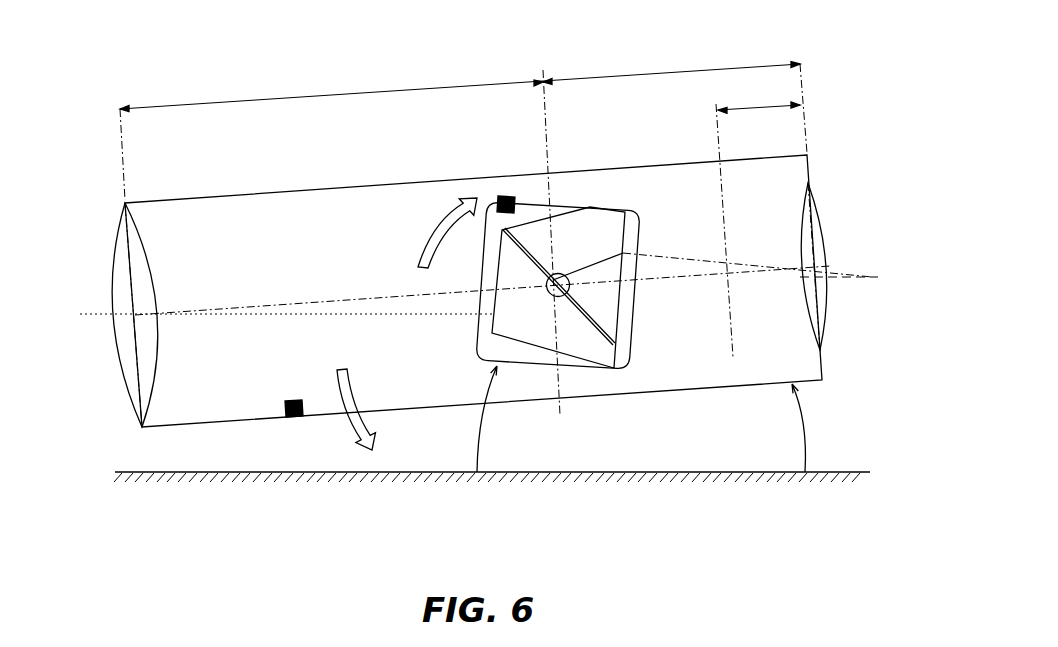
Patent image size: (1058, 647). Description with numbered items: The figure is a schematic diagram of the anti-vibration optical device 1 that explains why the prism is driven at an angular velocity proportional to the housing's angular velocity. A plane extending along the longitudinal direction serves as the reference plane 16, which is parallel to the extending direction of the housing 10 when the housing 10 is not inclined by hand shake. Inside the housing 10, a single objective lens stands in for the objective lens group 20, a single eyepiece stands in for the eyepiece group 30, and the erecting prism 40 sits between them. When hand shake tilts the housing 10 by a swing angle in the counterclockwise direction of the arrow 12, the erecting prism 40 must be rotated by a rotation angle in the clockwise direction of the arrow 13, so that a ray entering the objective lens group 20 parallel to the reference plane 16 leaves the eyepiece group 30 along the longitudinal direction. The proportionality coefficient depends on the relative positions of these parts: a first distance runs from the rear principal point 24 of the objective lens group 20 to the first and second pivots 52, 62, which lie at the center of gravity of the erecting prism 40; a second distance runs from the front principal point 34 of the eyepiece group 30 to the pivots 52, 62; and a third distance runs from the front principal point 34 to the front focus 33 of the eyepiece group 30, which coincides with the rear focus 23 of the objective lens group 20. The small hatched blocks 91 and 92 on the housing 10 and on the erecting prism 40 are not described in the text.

The anti-vibration optical device 1 is at (832, 60).
The housing 10 is at (187, 427).
The arrow 12 is at (348, 427).
The arrow 13 is at (413, 227).
The reference plane 16 is at (132, 472).
The objective lens group 20 is at (133, 393).
The rear principal point 24 is at (133, 313).
The eyepiece group 30 is at (812, 200).
The front principal point 34 is at (823, 253).
The erecting prism 40 is at (637, 318).
The first pivot 52 is at (534, 405).
The second pivot 62 is at (550, 295).
The rear focus 23 is at (479, 397).
The front focus 33 is at (727, 272).
The first stopper 91 is at (288, 416).
The second stopper 92 is at (503, 196).